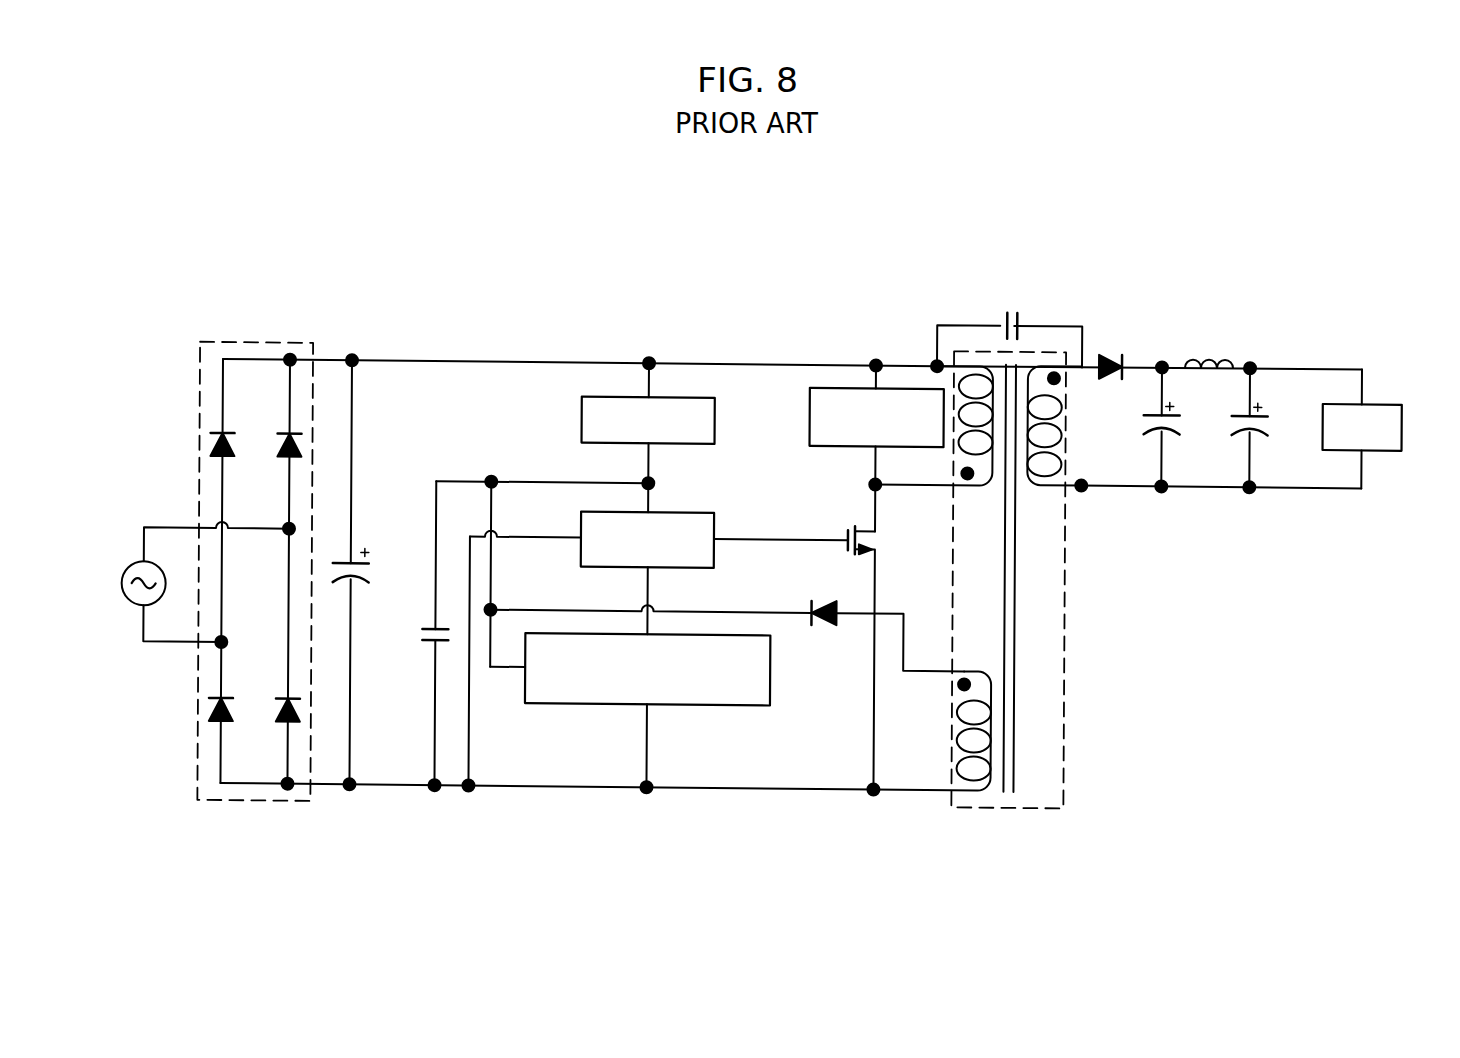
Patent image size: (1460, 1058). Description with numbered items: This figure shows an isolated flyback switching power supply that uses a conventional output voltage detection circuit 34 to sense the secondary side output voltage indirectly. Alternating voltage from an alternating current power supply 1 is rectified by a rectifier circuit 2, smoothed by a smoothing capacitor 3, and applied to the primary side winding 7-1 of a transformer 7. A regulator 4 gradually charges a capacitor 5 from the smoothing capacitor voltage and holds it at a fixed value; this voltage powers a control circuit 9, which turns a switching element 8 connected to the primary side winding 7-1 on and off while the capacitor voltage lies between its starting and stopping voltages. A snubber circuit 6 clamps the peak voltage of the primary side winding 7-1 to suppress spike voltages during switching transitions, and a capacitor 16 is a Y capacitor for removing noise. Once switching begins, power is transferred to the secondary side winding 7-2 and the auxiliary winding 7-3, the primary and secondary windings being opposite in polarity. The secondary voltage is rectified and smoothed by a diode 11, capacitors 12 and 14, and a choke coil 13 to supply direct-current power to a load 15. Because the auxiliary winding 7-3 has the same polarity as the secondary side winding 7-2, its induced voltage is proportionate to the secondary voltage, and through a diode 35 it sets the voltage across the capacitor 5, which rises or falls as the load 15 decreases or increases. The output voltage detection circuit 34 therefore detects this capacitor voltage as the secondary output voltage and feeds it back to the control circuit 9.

The alternating current power supply 1 is at (129, 567).
The rectifier circuit 2 is at (255, 342).
The smoothing capacitor 3 is at (339, 567).
The regulator 4 is at (715, 407).
The capacitor 5 is at (422, 628).
The snubber circuit 6 is at (810, 422).
The transformer 7 is at (980, 611).
The primary side winding 7-1 is at (979, 482).
The secondary side winding 7-2 is at (1049, 482).
The auxiliary winding 7-3 is at (962, 660).
The switching element 8 is at (842, 524).
The control circuit 9 is at (710, 507).
The diode 11 is at (1107, 346).
The capacitor 12 is at (1151, 421).
The choke coil 13 is at (1200, 340).
The capacitor 14 is at (1266, 420).
The load 15 is at (1395, 392).
The capacitor 16 is at (1012, 297).
The output voltage detection circuit 34 is at (724, 699).
The diode 35 is at (823, 622).